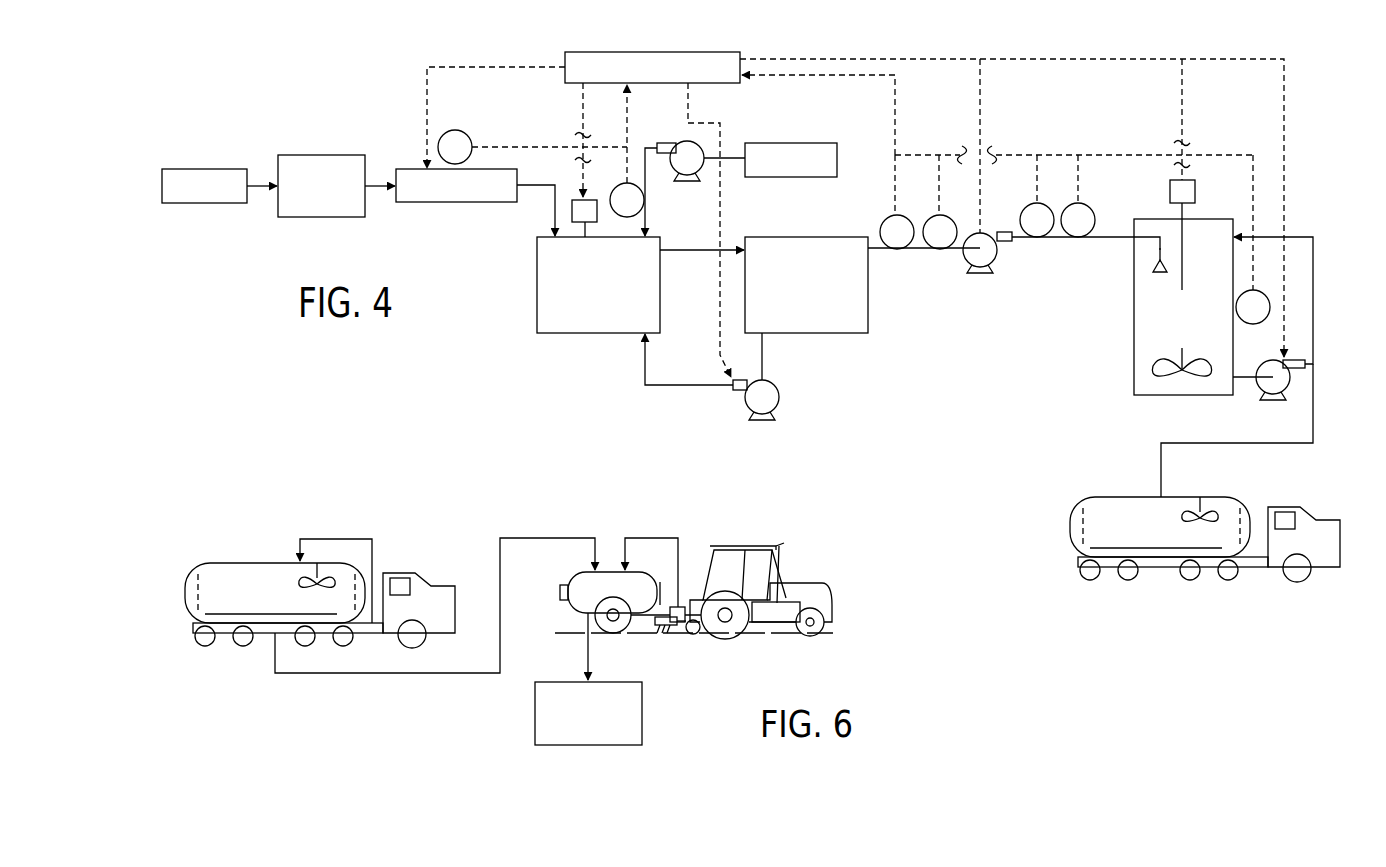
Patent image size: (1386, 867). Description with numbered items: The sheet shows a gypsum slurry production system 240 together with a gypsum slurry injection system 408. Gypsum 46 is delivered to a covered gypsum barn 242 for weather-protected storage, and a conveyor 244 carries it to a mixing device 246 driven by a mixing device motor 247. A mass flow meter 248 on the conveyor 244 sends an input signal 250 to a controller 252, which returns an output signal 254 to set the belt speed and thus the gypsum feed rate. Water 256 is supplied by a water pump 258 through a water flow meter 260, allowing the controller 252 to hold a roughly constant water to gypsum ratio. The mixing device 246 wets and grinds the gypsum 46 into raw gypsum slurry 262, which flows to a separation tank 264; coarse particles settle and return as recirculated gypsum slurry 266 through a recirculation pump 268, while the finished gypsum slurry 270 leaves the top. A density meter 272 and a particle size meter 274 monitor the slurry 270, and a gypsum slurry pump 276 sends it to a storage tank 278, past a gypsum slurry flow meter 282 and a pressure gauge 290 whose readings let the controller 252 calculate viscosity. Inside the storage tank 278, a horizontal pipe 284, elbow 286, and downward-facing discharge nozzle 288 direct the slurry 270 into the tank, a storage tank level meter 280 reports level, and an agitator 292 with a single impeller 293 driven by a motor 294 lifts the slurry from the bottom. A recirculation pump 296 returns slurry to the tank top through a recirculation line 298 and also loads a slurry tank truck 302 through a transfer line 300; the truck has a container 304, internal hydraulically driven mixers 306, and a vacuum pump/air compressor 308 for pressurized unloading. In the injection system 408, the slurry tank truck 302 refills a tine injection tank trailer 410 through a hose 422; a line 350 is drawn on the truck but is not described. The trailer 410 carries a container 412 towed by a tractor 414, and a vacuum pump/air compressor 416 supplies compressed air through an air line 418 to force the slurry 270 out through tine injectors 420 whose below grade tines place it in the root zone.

In FIG. 4, the gypsum 46 is at (207, 168).
In FIG. 4, the gypsum slurry production system 240 is at (775, 51).
In FIG. 4, the gypsum barn 242 is at (320, 155).
In FIG. 4, the conveyor 244 is at (460, 203).
In FIG. 4, the mixing device 246 is at (537, 288).
In FIG. 4, the mixing device motor 247 is at (572, 211).
In FIG. 4, the mass flow meter 248 is at (463, 131).
In FIG. 4, the input signal 250 is at (504, 147).
In FIG. 4, the controller 252 is at (585, 52).
In FIG. 4, the output signal 254 is at (484, 66).
In FIG. 4, the water 256 is at (805, 143).
In FIG. 4, the water pump 258 is at (687, 182).
In FIG. 4, the water flow meter 260 is at (627, 183).
In FIG. 4, the raw gypsum slurry 262 is at (723, 250).
In FIG. 4, the separation tank 264 is at (868, 318).
In FIG. 4, the recirculated gypsum slurry 266 is at (762, 355).
In FIG. 4, the recirculation pump 268 is at (779, 404).
In FIG. 4, the gypsum slurry 270 is at (883, 250).
In FIG. 6, the gypsum slurry 270 is at (200, 600).
In FIG. 4, the density meter 272 is at (885, 222).
In FIG. 4, the particle size meter 274 is at (936, 215).
In FIG. 4, the gypsum slurry pump 276 is at (981, 275).
In FIG. 4, the storage tank 278 is at (1134, 362).
In FIG. 4, the storage tank level meter 280 is at (1253, 324).
In FIG. 4, the gypsum slurry flow meter 282 is at (1031, 206).
In FIG. 4, the horizontal pipe 284 is at (1149, 241).
In FIG. 4, the elbow 286 is at (1160, 234).
In FIG. 4, the discharge nozzle 288 is at (1153, 269).
In FIG. 4, the pressure gauge 290 is at (1083, 206).
In FIG. 4, the agitator 292 is at (1149, 354).
In FIG. 4, the impeller 293 is at (1159, 381).
In FIG. 4, the motor 294 is at (1195, 190).
In FIG. 4, the recirculation pump 296 is at (1266, 401).
In FIG. 4, the recirculation line 298 is at (1316, 252).
In FIG. 4, the transfer line 300 is at (1313, 404).
In FIG. 4, the slurry tank truck 302 is at (1174, 534).
In FIG. 6, the slurry tank truck 302 is at (304, 602).
In FIG. 4, the container 304 is at (1070, 526).
In FIG. 6, the container 304 is at (188, 576).
In FIG. 4, the hydraulically driven mixer 306 is at (1200, 506).
In FIG. 6, the hydraulically driven mixer 306 is at (321, 583).
In FIG. 4, the vacuum pump/air compressor 308 is at (1256, 568).
In FIG. 6, the vacuum pump/air compressor 308 is at (372, 637).
In FIG. 6, the recirculation line 350 is at (372, 540).
In FIG. 6, the gypsum slurry injection system 408 is at (517, 496).
In FIG. 6, the tine injection tank trailer 410 is at (743, 499).
In FIG. 6, the container 412 is at (571, 580).
In FIG. 6, the tractor 414 is at (752, 548).
In FIG. 6, the vacuum pump/air compressor 416 is at (700, 637).
In FIG. 6, the air line 418 is at (657, 538).
In FIG. 6, the tine injector 420 is at (535, 716).
In FIG. 6, the hose 422 is at (325, 673).